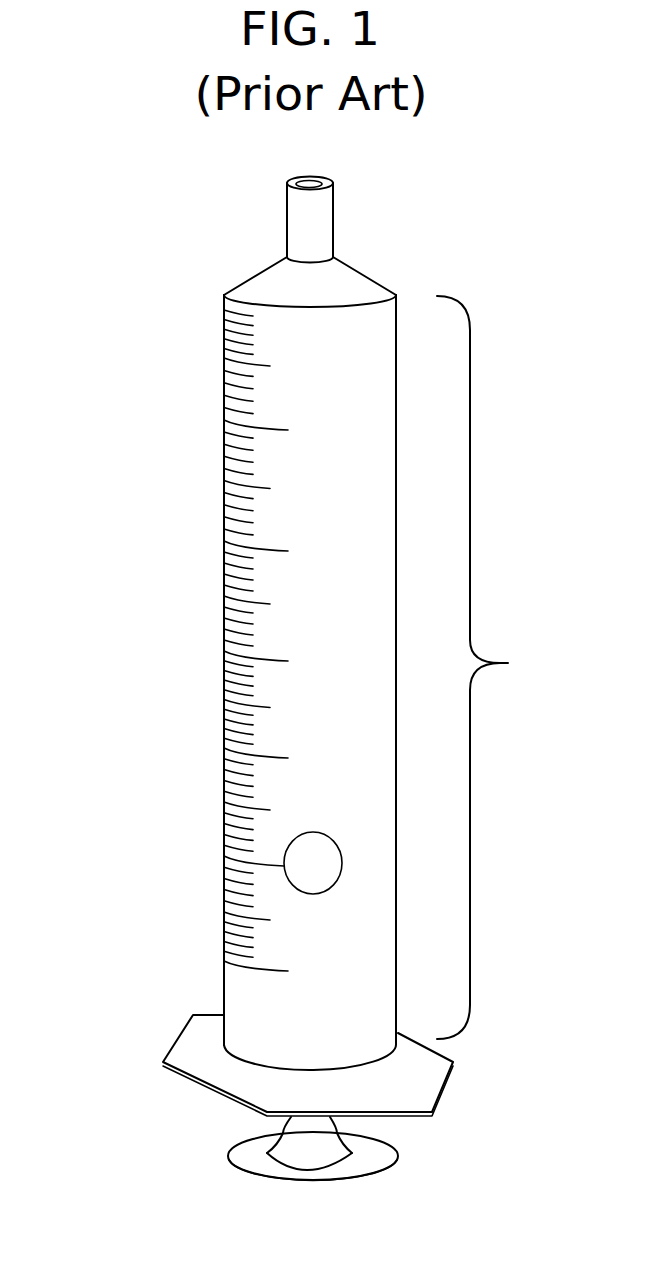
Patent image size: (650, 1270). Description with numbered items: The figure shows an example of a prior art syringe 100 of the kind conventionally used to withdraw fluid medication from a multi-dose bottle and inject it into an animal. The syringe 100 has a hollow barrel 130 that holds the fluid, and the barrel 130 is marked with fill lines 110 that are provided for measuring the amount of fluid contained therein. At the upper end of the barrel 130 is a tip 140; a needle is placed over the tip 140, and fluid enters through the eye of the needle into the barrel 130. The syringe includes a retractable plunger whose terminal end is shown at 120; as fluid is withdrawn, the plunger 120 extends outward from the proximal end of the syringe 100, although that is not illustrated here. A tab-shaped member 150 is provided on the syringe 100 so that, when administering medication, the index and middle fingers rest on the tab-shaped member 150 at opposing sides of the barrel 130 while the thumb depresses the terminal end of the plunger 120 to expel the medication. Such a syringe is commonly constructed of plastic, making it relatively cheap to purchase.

The prior art syringe 100 is at (52, 190).
The fill lines 110 is at (224, 500).
The terminal end of plunger 120 is at (250, 1167).
The hollow barrel 130 is at (499, 667).
The tip 140 is at (332, 184).
The tab-shaped member 150 is at (423, 1082).